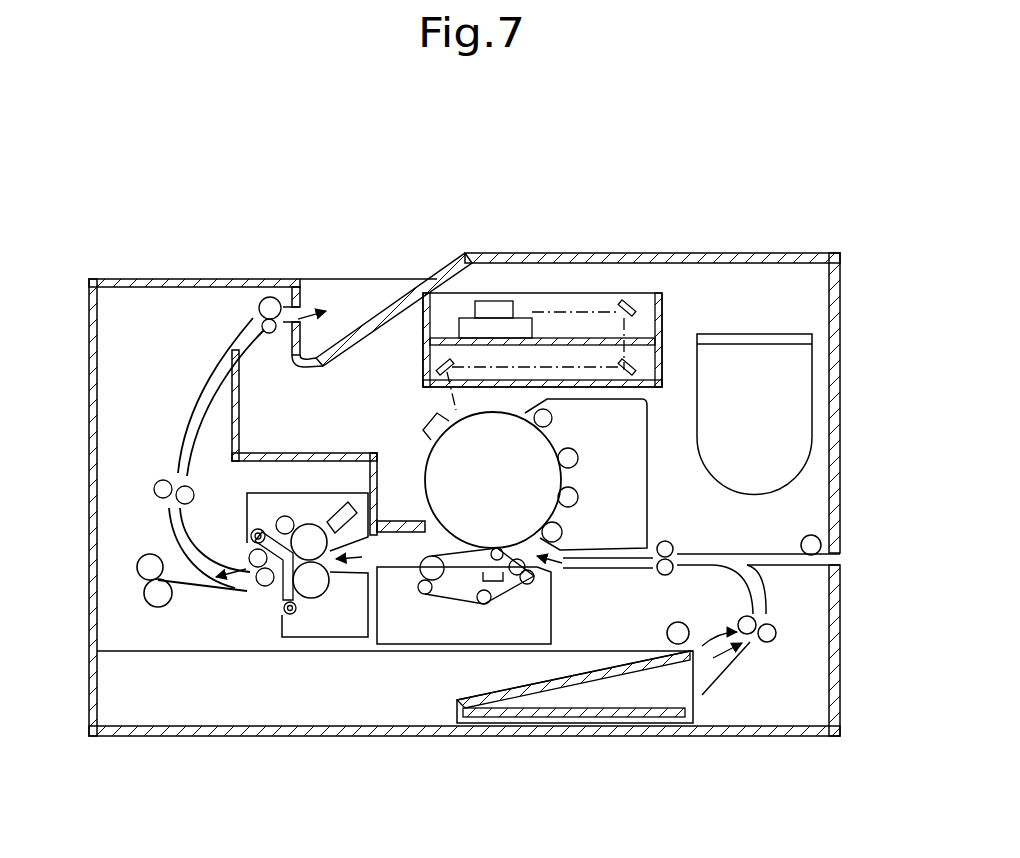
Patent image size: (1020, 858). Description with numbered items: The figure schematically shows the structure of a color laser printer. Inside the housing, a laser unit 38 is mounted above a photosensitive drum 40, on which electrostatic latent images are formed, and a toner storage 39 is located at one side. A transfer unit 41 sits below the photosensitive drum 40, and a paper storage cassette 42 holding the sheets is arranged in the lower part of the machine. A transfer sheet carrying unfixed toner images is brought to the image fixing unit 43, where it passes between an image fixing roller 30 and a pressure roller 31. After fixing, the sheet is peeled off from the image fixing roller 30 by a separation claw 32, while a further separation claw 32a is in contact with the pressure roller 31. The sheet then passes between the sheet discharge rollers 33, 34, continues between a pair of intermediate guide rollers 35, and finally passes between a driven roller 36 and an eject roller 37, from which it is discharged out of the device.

The image fixing roller 30 is at (308, 535).
The pressure roller 31 is at (322, 590).
The separation claw 32 is at (254, 533).
The separation claw 32a is at (292, 618).
The sheet discharge roller 33 is at (250, 556).
The sheet discharge roller 34 is at (264, 590).
The intermediate guide rollers 35 is at (178, 478).
The driven roller 36 is at (268, 297).
The eject roller 37 is at (256, 338).
The laser unit 38 is at (571, 291).
The toner storage 39 is at (817, 399).
The photosensitive drum 40 is at (440, 463).
The transfer unit 41 is at (443, 599).
The paper storage cassette 42 is at (611, 649).
The image fixing unit 43 is at (328, 642).